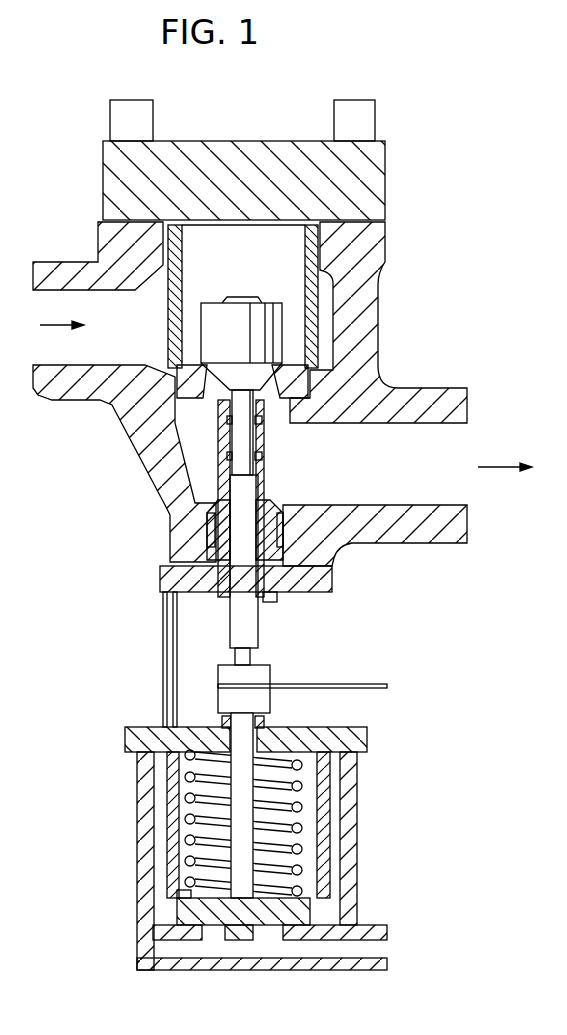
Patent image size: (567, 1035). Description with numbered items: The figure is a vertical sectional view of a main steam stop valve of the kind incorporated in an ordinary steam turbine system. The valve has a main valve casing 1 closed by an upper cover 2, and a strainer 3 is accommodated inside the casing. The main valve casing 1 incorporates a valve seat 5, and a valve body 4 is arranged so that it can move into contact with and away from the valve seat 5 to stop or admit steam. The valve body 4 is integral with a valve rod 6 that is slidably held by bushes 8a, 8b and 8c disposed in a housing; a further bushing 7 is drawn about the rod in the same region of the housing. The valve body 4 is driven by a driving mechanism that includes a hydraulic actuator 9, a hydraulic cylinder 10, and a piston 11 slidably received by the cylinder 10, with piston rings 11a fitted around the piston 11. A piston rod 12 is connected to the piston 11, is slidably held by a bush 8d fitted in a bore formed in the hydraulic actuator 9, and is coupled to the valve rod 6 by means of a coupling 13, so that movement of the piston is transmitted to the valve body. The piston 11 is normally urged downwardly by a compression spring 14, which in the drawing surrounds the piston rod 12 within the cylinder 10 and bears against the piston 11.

The main valve casing 1 is at (375, 262).
The upper cover 2 is at (372, 183).
The strainer 3 is at (306, 305).
The valve body 4 is at (222, 305).
The valve seat 5 is at (210, 402).
The valve rod 6 is at (258, 625).
The bushing 7 is at (220, 490).
The bush 8a is at (262, 422).
The bush 8b is at (262, 458).
The bush 8c is at (233, 598).
The bush 8d is at (267, 729).
The hydraulic actuator 9 is at (362, 746).
The hydraulic cylinder 10 is at (322, 813).
The piston 11 is at (320, 922).
The piston rings 11a is at (185, 895).
The piston rod 12 is at (238, 722).
The coupling 13 is at (270, 673).
The compression spring 14 is at (205, 744).